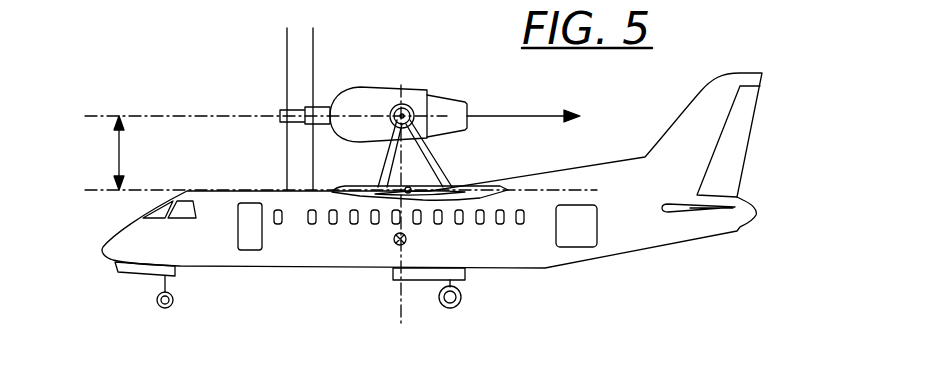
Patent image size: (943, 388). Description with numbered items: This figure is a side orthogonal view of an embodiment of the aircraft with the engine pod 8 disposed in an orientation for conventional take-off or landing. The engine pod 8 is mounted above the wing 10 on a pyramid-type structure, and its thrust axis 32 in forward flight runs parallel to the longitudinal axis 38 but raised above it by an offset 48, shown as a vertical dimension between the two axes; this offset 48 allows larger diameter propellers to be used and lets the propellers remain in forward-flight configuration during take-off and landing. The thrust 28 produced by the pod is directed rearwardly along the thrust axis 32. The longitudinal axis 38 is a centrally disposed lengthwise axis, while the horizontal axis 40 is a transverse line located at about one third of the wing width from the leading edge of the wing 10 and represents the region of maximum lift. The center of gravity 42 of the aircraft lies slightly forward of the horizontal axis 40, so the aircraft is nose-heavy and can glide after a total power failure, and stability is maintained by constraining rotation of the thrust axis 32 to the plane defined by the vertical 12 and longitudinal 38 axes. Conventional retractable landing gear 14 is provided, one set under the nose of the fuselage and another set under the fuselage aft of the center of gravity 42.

The engine pod 8 is at (378, 87).
The wing 10 is at (463, 185).
The vertical axis 12 is at (398, 285).
The landing gear 14 is at (163, 281).
The thrust 28 is at (502, 115).
The engine axis 32 is at (140, 116).
The longitudinal axis 38 is at (138, 190).
The horizontal axis 40 is at (412, 185).
The center of gravity 42 is at (393, 240).
The offset 48 is at (115, 147).